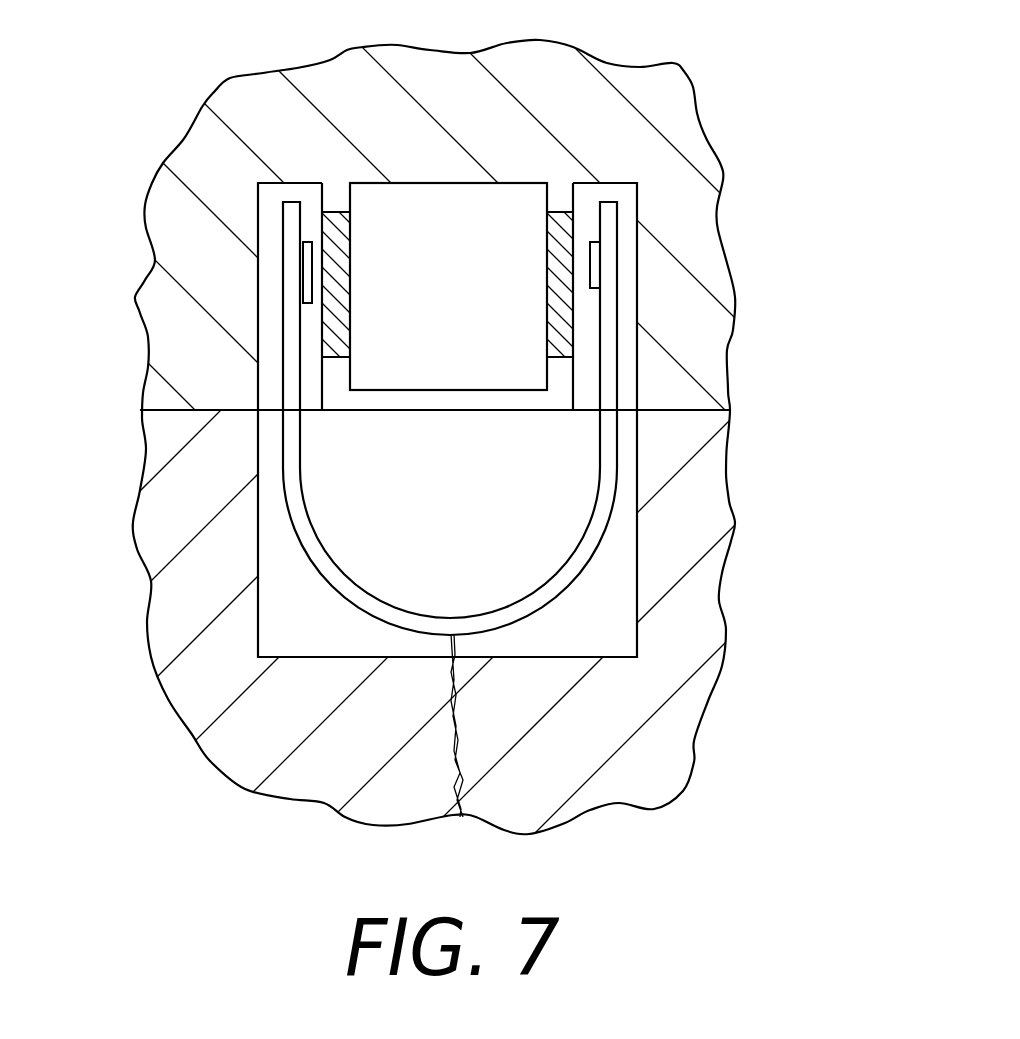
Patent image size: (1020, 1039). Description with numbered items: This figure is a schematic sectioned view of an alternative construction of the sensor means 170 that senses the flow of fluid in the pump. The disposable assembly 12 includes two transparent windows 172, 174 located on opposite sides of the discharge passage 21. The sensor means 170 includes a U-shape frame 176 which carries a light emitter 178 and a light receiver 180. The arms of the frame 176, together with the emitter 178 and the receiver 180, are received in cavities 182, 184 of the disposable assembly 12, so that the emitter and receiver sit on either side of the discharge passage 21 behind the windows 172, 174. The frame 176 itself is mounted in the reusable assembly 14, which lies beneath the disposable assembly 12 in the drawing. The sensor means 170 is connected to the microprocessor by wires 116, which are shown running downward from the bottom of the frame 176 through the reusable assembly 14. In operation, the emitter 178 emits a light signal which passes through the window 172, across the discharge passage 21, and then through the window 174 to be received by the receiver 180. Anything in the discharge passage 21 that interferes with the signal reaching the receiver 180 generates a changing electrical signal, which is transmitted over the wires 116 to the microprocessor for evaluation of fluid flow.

The disposable assembly 12 is at (705, 163).
The reusable assembly 14 is at (690, 712).
The discharge passage 21 is at (473, 183).
The wires 116 is at (461, 760).
The sensor means 170 is at (588, 418).
The U-shape frame 176 is at (611, 473).
The transparent window 172 is at (333, 328).
The transparent window 174 is at (568, 338).
The light emitter 178 is at (308, 242).
The light receiver 180 is at (597, 240).
The cavity 182 is at (262, 364).
The cavity 184 is at (638, 356).